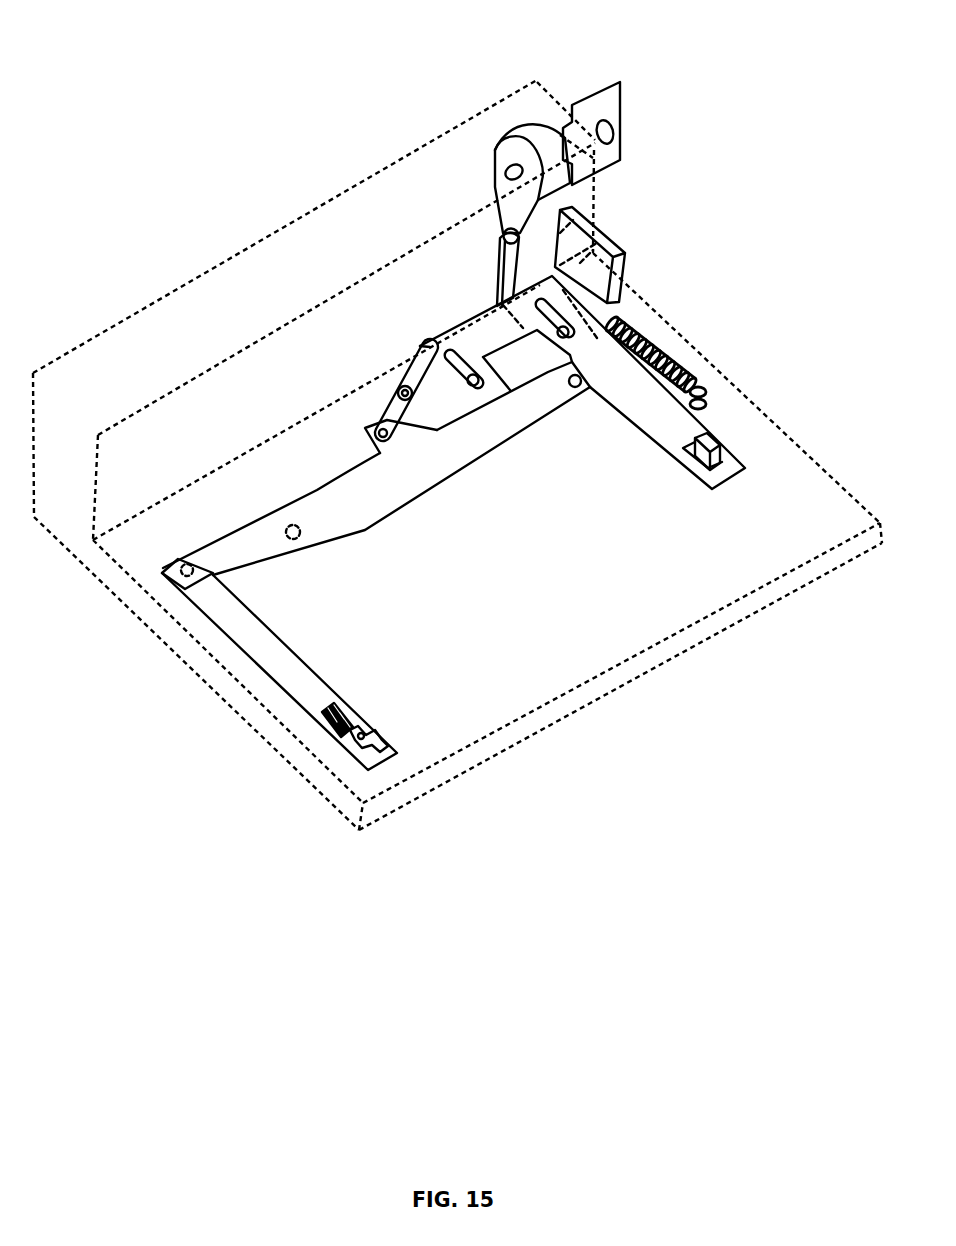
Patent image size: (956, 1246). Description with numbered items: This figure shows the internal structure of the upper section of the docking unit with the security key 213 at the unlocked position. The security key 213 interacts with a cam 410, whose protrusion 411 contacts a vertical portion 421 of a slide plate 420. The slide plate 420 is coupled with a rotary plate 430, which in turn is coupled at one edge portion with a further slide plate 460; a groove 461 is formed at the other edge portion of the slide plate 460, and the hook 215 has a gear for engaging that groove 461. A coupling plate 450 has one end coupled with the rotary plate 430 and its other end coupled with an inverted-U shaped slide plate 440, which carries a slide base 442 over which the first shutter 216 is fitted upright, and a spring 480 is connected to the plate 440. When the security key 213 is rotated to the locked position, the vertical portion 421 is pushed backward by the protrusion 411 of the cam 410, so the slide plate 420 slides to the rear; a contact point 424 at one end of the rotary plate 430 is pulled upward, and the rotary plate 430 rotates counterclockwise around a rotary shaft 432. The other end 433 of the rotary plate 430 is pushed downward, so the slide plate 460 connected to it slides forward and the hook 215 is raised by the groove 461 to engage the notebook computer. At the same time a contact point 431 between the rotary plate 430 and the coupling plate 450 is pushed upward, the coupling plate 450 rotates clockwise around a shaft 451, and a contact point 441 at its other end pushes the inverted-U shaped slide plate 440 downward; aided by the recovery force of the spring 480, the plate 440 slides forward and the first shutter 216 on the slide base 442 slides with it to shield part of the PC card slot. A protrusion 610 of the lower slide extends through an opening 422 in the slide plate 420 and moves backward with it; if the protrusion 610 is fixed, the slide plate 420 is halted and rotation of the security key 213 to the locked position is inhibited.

The security key 213 is at (607, 103).
The hook 215 is at (377, 740).
The first shutter 216 is at (613, 258).
The cam 410 is at (533, 143).
The protrusion 411 is at (507, 230).
The slide plate 420 is at (690, 420).
The vertical portion 421 is at (497, 262).
The opening 422 is at (717, 463).
The contact point 424 is at (577, 387).
The rotary plate 430 is at (358, 503).
The contact point 431 is at (378, 428).
The rotary shaft 432 is at (300, 545).
The other end 433 is at (165, 580).
The inverted-U shaped slide plate 440 is at (507, 392).
The contact point 441 is at (430, 348).
The slide base 442 is at (580, 303).
The coupling plate 450 is at (415, 373).
The shaft 451 is at (397, 405).
The slide plate 460 is at (255, 640).
The groove 461 is at (330, 718).
The spring 480 is at (650, 345).
The protrusion 610 is at (710, 437).